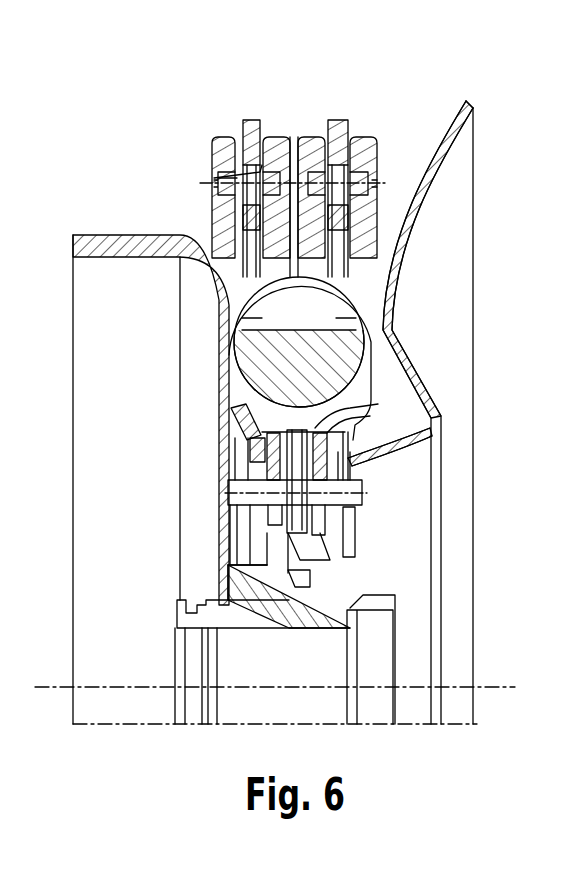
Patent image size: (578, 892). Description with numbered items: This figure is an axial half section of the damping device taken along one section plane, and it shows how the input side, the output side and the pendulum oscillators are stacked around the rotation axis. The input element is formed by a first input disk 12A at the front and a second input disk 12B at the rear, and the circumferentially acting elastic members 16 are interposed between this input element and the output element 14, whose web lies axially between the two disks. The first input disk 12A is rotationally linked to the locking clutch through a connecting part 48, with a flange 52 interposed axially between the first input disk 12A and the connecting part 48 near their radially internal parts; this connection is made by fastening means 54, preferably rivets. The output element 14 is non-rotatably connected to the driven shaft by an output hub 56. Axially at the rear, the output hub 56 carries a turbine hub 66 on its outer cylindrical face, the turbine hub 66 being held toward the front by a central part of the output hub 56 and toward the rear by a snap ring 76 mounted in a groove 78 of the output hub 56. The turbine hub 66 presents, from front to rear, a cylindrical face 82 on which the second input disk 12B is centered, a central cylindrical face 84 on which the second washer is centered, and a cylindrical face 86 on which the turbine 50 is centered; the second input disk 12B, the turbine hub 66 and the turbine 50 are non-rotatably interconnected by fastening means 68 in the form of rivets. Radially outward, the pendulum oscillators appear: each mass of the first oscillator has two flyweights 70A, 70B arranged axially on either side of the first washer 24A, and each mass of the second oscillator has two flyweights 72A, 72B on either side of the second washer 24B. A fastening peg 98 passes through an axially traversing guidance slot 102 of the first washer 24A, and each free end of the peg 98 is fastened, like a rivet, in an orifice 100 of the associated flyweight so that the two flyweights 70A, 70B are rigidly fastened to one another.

The connecting part 48 is at (108, 235).
The turbine 50 is at (437, 150).
The flyweight 70A is at (223, 212).
The flyweight 70B is at (276, 145).
The flyweight 72A is at (308, 150).
The flyweight 72B is at (360, 213).
The first washer 24A is at (253, 130).
The second washer 24B is at (338, 130).
The fastening peg 98 is at (236, 173).
The orifice 100 is at (212, 183).
The guidance slot 102 is at (248, 160).
The elastic member 16 is at (270, 358).
The second input disk 12B is at (340, 410).
The first input disk 12A is at (240, 450).
The output element 14 is at (258, 432).
The central cylindrical face 84 is at (340, 468).
The fastening means 68 is at (347, 480).
The fastening means 54 is at (230, 498).
The cylindrical face 86 is at (340, 530).
The turbine hub 66 is at (345, 540).
The snap ring 76 is at (330, 592).
The flange 52 is at (257, 547).
The output hub 56 is at (253, 615).
The cylindrical face 82 is at (313, 580).
The groove 78 is at (350, 613).